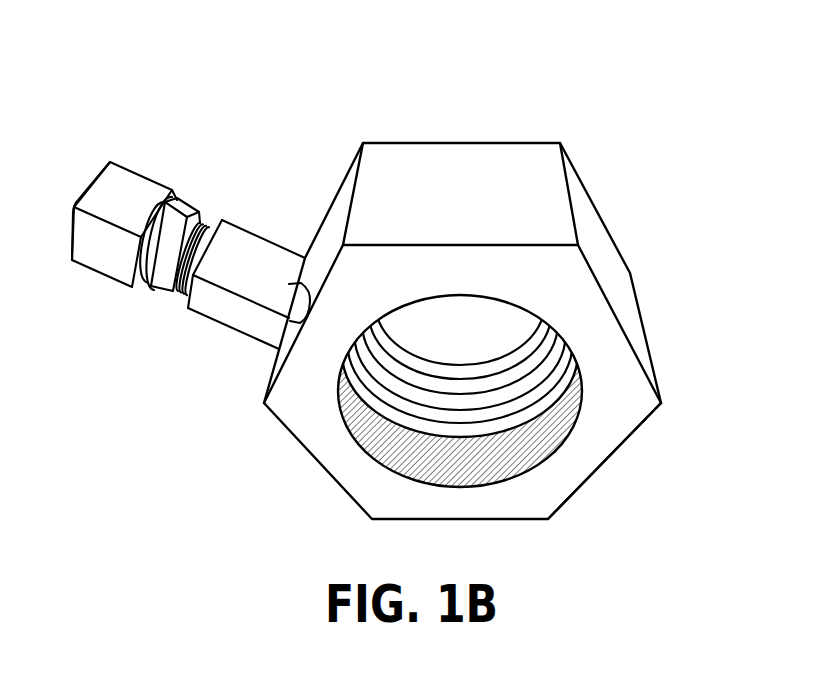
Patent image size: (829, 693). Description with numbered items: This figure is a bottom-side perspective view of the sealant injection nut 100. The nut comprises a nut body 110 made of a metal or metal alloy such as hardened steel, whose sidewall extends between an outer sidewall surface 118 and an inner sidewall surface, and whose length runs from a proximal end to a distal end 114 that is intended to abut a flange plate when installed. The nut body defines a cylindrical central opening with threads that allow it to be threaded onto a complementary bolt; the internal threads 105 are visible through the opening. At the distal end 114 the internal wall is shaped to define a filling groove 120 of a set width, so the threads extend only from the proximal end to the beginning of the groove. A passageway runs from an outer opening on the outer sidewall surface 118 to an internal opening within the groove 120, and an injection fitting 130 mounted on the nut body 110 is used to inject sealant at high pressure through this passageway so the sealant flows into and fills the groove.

The sealant injection nut 100 is at (208, 108).
The internal threads 105 is at (417, 411).
The nut body 110 is at (356, 153).
The distal end 114 is at (563, 494).
The outer sidewall surface 118 is at (533, 200).
The filling groove 120 is at (553, 428).
The injection fitting 130 is at (272, 320).